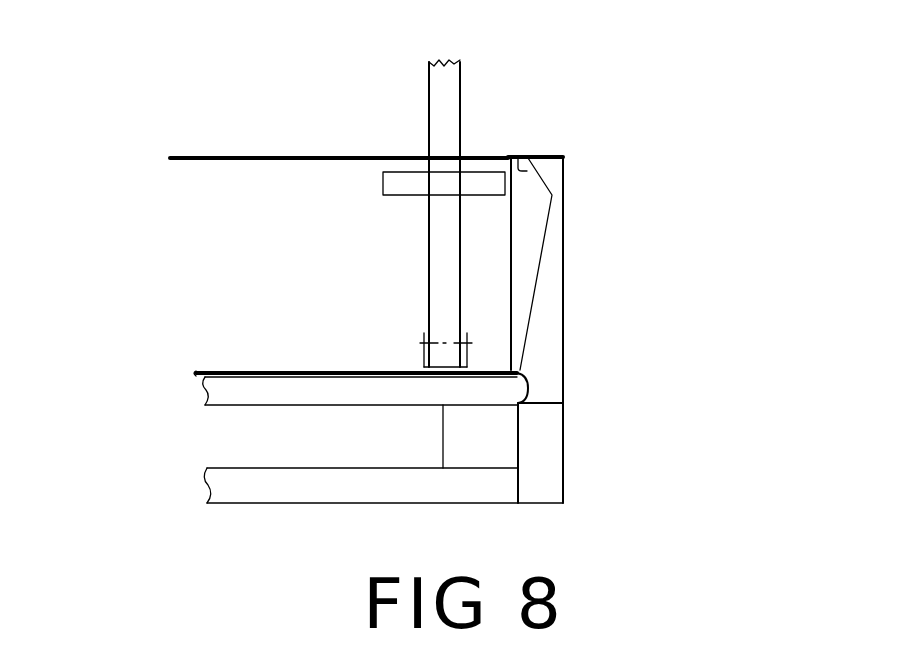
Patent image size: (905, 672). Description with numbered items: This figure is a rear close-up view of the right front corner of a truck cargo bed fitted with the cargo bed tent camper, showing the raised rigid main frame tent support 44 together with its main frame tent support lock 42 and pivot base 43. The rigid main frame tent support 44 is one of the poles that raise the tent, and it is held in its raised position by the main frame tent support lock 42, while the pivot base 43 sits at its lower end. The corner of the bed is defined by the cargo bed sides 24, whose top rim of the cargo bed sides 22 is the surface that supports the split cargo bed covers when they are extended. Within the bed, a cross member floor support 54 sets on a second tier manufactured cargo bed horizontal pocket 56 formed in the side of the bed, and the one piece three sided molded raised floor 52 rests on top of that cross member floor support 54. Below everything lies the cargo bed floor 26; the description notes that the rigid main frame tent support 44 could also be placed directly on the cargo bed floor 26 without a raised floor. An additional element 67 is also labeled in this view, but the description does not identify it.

The top rim of the cargo bed sides 22 is at (552, 153).
The cargo bed sides 24 is at (565, 208).
The cargo bed floor 26 is at (313, 464).
The main frame tent support lock 42 is at (378, 187).
The pivot base 43 is at (420, 345).
The rigid main frame tent support 44 is at (423, 120).
The one piece three sided molded raised floor 52 is at (272, 153).
The cross member floor support 54 is at (198, 395).
The second tier manufactured cargo bed horizontal pocket 56 is at (533, 380).
The block 67 is at (523, 432).